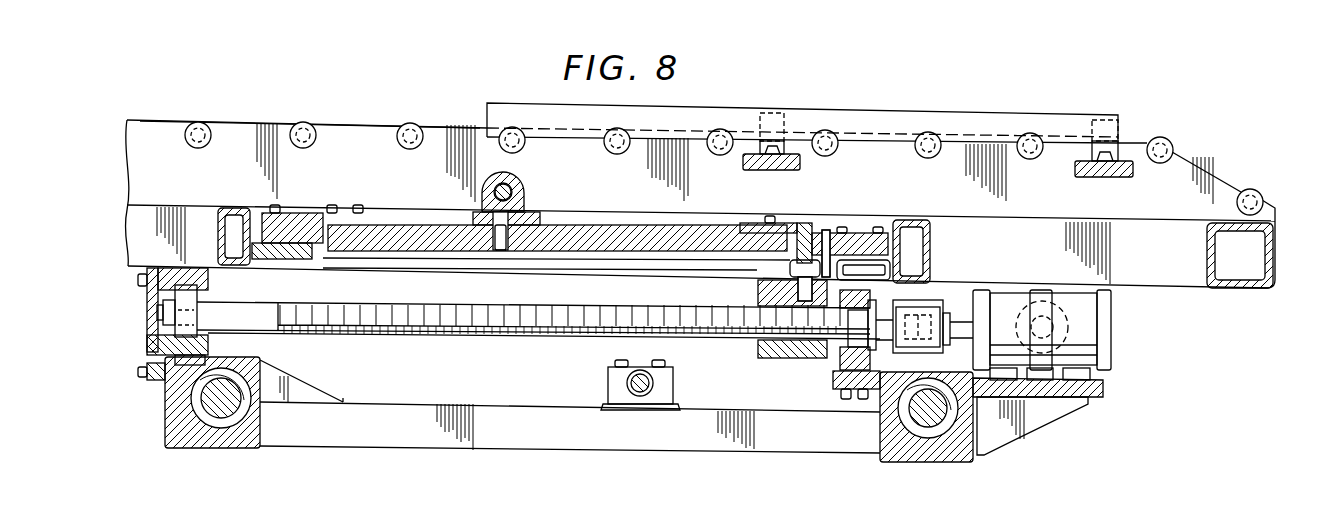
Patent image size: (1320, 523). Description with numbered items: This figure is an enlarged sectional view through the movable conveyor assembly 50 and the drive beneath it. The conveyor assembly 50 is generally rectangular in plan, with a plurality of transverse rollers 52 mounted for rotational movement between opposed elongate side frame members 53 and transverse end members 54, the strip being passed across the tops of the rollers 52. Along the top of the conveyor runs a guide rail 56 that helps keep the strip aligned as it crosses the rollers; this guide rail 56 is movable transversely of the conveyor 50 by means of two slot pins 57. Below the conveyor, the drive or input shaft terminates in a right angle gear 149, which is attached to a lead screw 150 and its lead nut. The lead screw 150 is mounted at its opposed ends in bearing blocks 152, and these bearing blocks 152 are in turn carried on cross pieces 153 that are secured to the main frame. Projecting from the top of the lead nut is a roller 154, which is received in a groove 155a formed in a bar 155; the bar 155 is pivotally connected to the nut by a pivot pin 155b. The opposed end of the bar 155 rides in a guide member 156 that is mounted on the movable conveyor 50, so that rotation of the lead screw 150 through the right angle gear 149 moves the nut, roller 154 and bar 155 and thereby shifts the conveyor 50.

The conveyor assembly 50 is at (1207, 150).
The transverse rollers 52 is at (313, 128).
The side frame members 53 is at (277, 128).
The transverse end members 54 is at (1275, 272).
The guide rail 56 is at (1052, 122).
The slot pins 57 is at (780, 127).
The right angle gear 149 is at (1110, 322).
The lead screw 150 is at (500, 338).
The bearing blocks 152 is at (210, 345).
The cross pieces 153 is at (258, 373).
The roller 154 is at (790, 266).
The bar 155 is at (597, 230).
The groove 155a is at (646, 265).
The pivot pin 155b is at (808, 225).
The guide member 156 is at (303, 210).